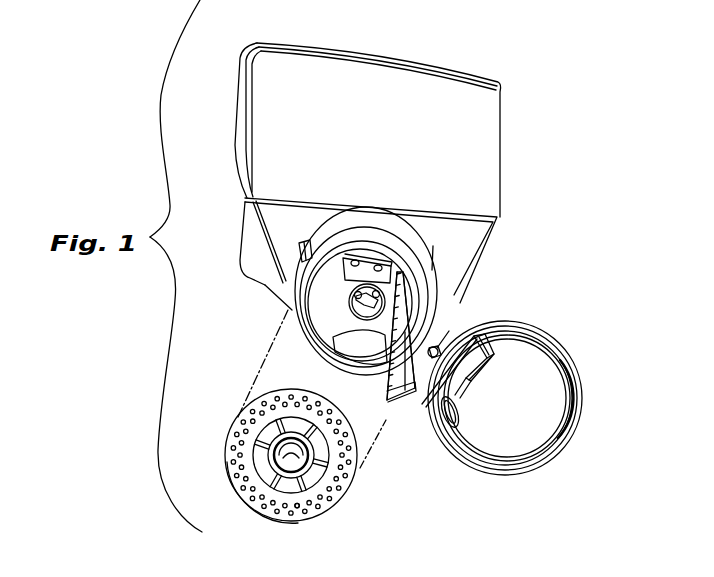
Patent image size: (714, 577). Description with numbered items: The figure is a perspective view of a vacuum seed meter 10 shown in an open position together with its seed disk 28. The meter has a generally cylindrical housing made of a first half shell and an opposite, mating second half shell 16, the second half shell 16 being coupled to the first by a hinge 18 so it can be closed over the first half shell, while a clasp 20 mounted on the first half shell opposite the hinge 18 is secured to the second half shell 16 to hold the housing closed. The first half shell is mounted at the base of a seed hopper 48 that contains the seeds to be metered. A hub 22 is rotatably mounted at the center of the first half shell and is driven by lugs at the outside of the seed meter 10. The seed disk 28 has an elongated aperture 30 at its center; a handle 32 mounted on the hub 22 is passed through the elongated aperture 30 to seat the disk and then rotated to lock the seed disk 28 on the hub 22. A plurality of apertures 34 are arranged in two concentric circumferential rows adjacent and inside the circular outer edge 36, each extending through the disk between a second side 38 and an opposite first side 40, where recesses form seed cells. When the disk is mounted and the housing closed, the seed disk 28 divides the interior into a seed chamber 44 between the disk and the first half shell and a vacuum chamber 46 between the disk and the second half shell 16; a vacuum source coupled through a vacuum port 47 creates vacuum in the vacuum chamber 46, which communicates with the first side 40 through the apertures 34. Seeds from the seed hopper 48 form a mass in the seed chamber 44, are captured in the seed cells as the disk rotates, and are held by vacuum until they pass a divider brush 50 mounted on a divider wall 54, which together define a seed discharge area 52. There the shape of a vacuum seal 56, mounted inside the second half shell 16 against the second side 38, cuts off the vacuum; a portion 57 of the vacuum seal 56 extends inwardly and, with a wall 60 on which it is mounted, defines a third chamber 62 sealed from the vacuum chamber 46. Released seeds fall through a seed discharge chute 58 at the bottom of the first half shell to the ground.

The vacuum seed meter 10 is at (515, 301).
The second half shell 16 is at (500, 475).
The hinge 18 is at (446, 334).
The clasp 20 is at (303, 243).
The hub 22 is at (337, 306).
The seed disk 28 is at (281, 516).
The elongated aperture 30 is at (242, 458).
The handle 32 is at (349, 296).
The apertures 34 is at (298, 509).
The circular outer edge 36 is at (254, 511).
The second side 38 is at (232, 428).
The first side 40 is at (305, 387).
The seed chamber 44 is at (328, 319).
The vacuum chamber 46 is at (549, 405).
The vacuum port 47 is at (436, 378).
The seed hopper 48 is at (372, 139).
The divider brush 50 is at (392, 296).
The seed discharge area 52 is at (393, 403).
The divider wall 54 is at (399, 316).
The vacuum seal 56 is at (573, 441).
The portion of the vacuum seal 57 is at (470, 387).
The seed discharge chute 58 is at (392, 360).
The wall 60 is at (483, 377).
The third chamber 62 is at (530, 350).